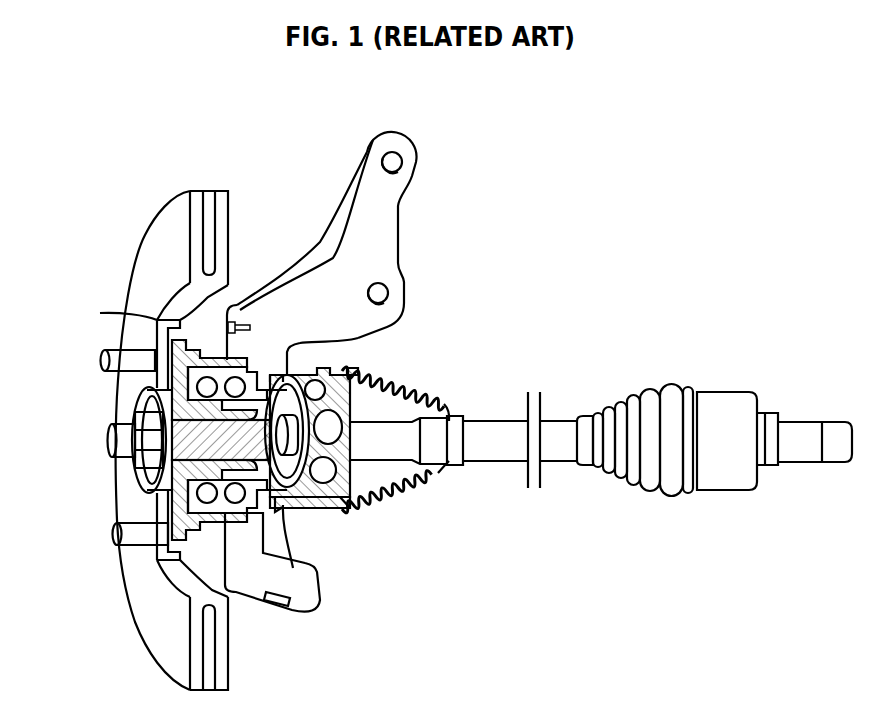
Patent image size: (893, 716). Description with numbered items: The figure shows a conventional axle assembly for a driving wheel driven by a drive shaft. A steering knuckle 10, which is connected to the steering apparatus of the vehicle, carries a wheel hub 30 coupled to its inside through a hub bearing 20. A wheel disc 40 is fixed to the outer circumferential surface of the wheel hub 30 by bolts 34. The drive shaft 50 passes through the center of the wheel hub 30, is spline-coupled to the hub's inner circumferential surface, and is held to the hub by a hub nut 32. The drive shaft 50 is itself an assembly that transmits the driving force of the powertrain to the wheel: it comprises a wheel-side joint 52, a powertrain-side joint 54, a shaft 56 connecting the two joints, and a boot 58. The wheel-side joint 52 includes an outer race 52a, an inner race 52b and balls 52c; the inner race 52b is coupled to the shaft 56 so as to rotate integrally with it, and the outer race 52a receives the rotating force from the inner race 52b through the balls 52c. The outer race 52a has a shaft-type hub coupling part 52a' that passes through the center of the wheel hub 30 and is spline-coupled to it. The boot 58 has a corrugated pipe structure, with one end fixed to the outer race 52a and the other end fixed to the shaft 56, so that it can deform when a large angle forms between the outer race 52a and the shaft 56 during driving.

The steering knuckle 10 is at (360, 207).
The hub bearing 20 is at (210, 362).
The wheel hub 30 is at (168, 400).
The hub nut 32 is at (115, 452).
The bolts 34 is at (101, 350).
The wheel disc 40 is at (171, 210).
The drive shaft 50 is at (500, 421).
The wheel-side joint 52 is at (344, 397).
The outer race 52a is at (323, 548).
The hub coupling part 52a' is at (156, 472).
The inner race 52b is at (277, 373).
The balls 52c is at (345, 500).
The powertrain-side joint 54 is at (718, 392).
The shaft 56 is at (555, 420).
The boot 58 is at (437, 472).